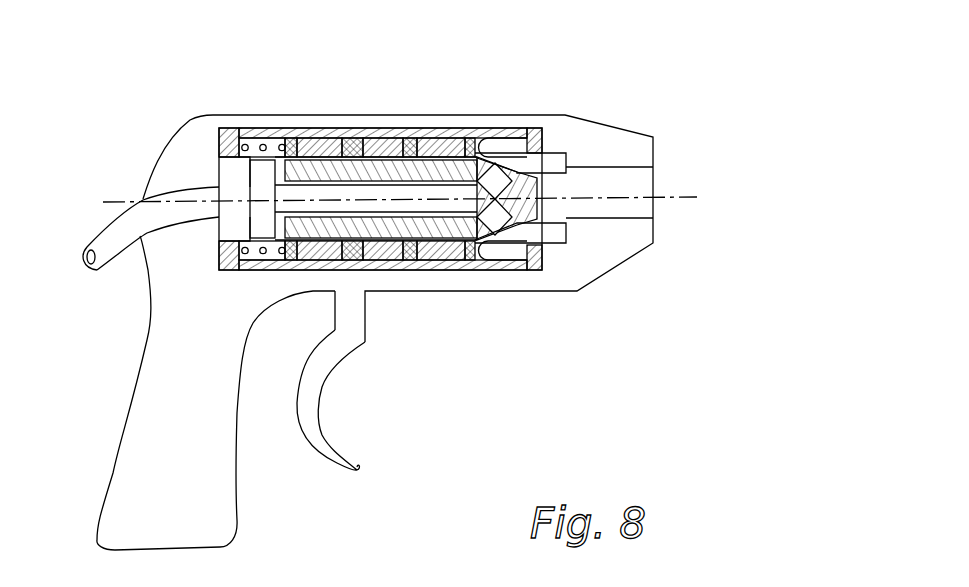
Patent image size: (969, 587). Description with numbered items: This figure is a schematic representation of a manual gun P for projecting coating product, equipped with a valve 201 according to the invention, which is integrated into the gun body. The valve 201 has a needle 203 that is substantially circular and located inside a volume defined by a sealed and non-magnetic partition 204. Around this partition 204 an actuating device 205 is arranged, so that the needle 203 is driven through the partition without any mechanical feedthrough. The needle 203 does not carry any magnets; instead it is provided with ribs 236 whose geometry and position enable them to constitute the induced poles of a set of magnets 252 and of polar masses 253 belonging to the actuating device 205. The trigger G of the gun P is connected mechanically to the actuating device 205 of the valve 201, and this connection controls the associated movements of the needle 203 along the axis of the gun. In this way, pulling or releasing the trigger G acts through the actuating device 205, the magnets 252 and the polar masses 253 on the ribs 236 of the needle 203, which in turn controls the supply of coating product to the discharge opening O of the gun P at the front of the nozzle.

The valve 201 is at (566, 110).
The sealed and non-magnetic partition 204 is at (317, 131).
The polar masses 253 is at (362, 136).
The actuating device 205 is at (397, 134).
The set of magnets 252 is at (458, 131).
The ribs 236 is at (417, 245).
The needle 203 is at (460, 250).
The trigger G is at (310, 413).
The gun P is at (157, 467).
The discharge opening O is at (647, 207).